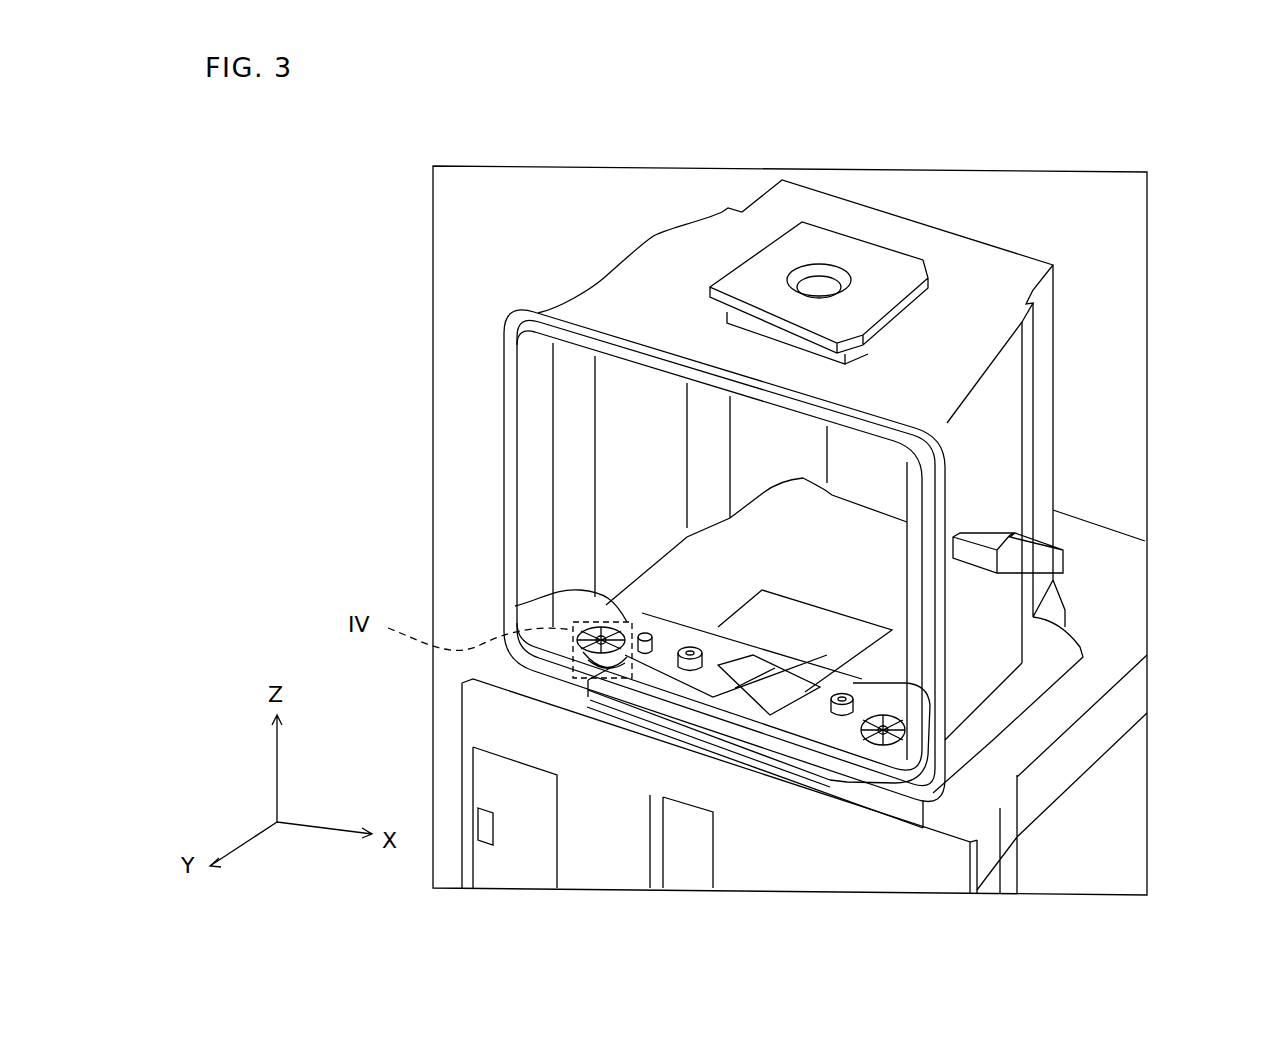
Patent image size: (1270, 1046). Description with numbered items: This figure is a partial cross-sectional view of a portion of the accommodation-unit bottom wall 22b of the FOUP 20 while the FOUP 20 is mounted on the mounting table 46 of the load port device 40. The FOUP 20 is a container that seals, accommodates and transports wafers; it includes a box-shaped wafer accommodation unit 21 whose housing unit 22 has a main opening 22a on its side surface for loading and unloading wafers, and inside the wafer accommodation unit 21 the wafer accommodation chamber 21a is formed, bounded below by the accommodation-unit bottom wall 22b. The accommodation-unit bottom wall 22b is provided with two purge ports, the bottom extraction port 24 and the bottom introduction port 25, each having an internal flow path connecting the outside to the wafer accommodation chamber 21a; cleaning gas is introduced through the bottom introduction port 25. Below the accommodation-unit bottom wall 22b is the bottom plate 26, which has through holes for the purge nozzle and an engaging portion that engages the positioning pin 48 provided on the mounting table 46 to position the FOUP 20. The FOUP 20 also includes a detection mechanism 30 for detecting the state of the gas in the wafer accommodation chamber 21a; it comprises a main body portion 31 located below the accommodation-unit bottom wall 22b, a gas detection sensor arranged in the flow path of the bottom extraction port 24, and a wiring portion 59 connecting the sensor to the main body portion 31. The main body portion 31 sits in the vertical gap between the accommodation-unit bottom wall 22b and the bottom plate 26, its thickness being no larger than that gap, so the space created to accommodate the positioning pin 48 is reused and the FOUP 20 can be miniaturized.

The FOUP 20 is at (986, 212).
The wafer accommodation unit 21 is at (1091, 317).
The wafer accommodation chamber 21a is at (558, 527).
The housing unit 22 is at (655, 268).
The main opening 22a is at (857, 583).
The accommodation-unit bottom wall 22b is at (712, 690).
The bottom extraction port 24 is at (583, 655).
The bottom introduction port 25 is at (842, 716).
The bottom plate 26 is at (627, 665).
The detection mechanism 30 is at (806, 707).
The main body portion 31 is at (760, 693).
The load port device 40 is at (1134, 849).
The mounting table 46 is at (1110, 553).
The positioning pin 48 is at (638, 637).
The wiring portion 59 is at (708, 630).